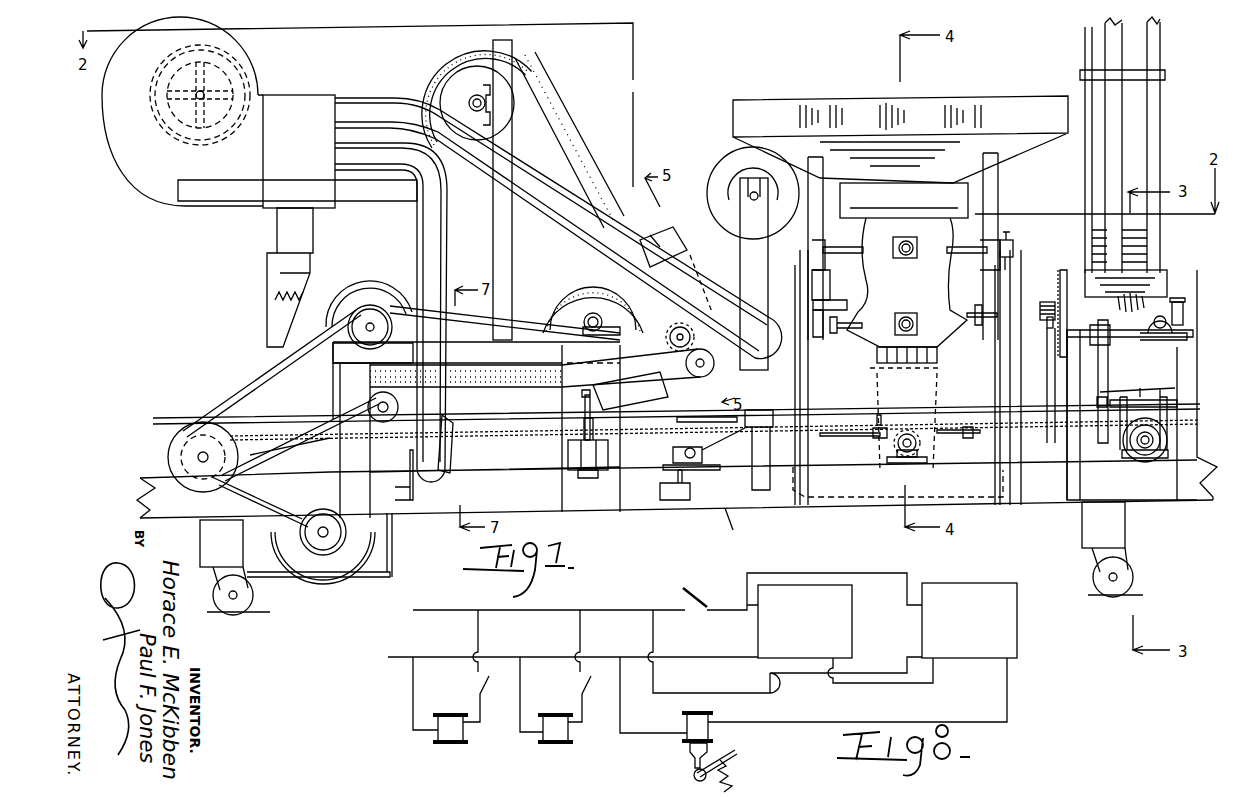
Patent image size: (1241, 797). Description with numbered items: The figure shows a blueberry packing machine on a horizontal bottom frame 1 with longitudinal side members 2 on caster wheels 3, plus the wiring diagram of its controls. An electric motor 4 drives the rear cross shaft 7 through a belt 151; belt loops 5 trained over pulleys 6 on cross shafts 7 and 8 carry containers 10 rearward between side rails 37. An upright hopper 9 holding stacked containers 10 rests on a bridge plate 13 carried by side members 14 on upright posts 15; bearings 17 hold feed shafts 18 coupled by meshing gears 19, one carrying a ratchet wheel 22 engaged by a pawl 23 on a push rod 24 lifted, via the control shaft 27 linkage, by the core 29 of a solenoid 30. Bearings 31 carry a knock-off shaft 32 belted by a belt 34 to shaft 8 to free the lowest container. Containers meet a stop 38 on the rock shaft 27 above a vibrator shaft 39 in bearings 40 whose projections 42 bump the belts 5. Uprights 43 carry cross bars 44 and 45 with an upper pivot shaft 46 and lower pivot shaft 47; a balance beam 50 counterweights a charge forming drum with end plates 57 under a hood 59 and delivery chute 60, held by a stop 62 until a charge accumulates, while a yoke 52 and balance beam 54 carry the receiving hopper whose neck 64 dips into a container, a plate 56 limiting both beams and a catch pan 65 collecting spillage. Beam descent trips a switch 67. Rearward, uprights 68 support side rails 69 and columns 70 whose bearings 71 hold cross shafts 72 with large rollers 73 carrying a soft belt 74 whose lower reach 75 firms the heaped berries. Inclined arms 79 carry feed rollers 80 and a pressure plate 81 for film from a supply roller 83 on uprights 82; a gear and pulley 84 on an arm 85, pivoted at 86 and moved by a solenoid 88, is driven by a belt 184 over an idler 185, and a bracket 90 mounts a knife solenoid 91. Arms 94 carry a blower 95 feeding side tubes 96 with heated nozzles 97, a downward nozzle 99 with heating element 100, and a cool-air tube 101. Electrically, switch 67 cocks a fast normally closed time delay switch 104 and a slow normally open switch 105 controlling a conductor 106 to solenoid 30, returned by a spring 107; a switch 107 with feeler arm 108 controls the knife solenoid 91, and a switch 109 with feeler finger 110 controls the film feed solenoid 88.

In FIG. 1, the bottom frame 1 is at (775, 505).
In FIG. 1, the longitudinal side members 2 is at (731, 530).
In FIG. 1, the caster wheels 3 is at (233, 607).
In FIG. 1, the electric motor 4 is at (335, 560).
In FIG. 1, the belt loops 5 is at (330, 440).
In FIG. 1, the pulleys 6 is at (185, 447).
In FIG. 1, the rear cross shaft 7 is at (198, 457).
In FIG. 1, the front cross shaft 8 is at (1160, 440).
In FIG. 1, the storage hopper 9 is at (1157, 132).
In FIG. 1, the containers 10 is at (940, 383).
In FIG. 1, the bridge plate 13 is at (1167, 280).
In FIG. 1, the side members 14 is at (1150, 350).
In FIG. 1, the upright posts 15 is at (1185, 377).
In FIG. 1, the bearings 17 is at (1183, 310).
In FIG. 1, the container feed shafts 18 is at (1172, 300).
In FIG. 1, the meshing gears 19 is at (1060, 270).
In FIG. 1, the ratchet wheel 22 is at (1045, 300).
In FIG. 1, the pawl 23 is at (1048, 325).
In FIG. 1, the push rod 24 is at (1050, 360).
In FIG. 1, the control shaft 27 is at (838, 437).
In FIG. 1, the reciprocable core 29 is at (1105, 380).
In FIG. 1, the solenoid 30 is at (1117, 368).
In FIG. 8, the solenoid 30 is at (685, 743).
In FIG. 1, the bearings 31 is at (1185, 340).
In FIG. 1, the knock-off shaft 32 is at (1175, 322).
In FIG. 1, the belt 34 is at (1145, 393).
In FIG. 1, the side rails 37 is at (170, 418).
In FIG. 1, the stop 38 is at (878, 420).
In FIG. 1, the transverse shaft 39 is at (905, 460).
In FIG. 1, the bearings 40 is at (912, 465).
In FIG. 1, the radial projections 42 is at (893, 445).
In FIG. 1, the uprights 43 is at (800, 473).
In FIG. 1, the upper cross bar 44 is at (810, 273).
In FIG. 1, the lower cross bar 45 is at (818, 338).
In FIG. 1, the upper pivot shaft 46 is at (860, 250).
In FIG. 1, the lower pivot shaft 47 is at (855, 325).
In FIG. 1, the balance beam 50 is at (905, 258).
In FIG. 1, the yoke 52 is at (943, 327).
In FIG. 1, the balance beam 54 is at (907, 317).
In FIG. 1, the plate 56 is at (950, 345).
In FIG. 1, the circular end plates 57 is at (823, 285).
In FIG. 1, the semi-cylindrical hood 59 is at (960, 197).
In FIG. 1, the delivery chute 60 is at (1018, 143).
In FIG. 1, the stop 62 is at (847, 300).
In FIG. 1, the neck 64 is at (877, 355).
In FIG. 1, the catch pan 65 is at (980, 500).
In FIG. 1, the electric switch 67 is at (1013, 245).
In FIG. 8, the electric switch 67 is at (700, 600).
In FIG. 1, the uprights 68 is at (390, 518).
In FIG. 1, the elevated side rails 69 is at (528, 350).
In FIG. 1, the columns 70 is at (512, 150).
In FIG. 1, the bearings 71 is at (472, 103).
In FIG. 1, the cross shafts 72 is at (480, 103).
In FIG. 1, the rollers 73 is at (467, 75).
In FIG. 1, the deformable belt 74 is at (563, 153).
In FIG. 1, the lower reach 75 is at (505, 380).
In FIG. 1, the inclined arms 79 is at (640, 395).
In FIG. 1, the feed rollers 80 is at (700, 262).
In FIG. 1, the pressure plate 81 is at (677, 323).
In FIG. 1, the uprights 82 is at (752, 235).
In FIG. 1, the supply roller 83 is at (735, 177).
In FIG. 1, the drive gear and pulley 84 is at (708, 370).
In FIG. 1, the arm 85 is at (585, 405).
In FIG. 1, the pivot 86 is at (725, 328).
In FIG. 1, the solenoid 88 is at (580, 462).
In FIG. 8, the solenoid 88 is at (452, 745).
In FIG. 1, the bracket 90 is at (675, 242).
In FIG. 1, the solenoid 91 is at (655, 238).
In FIG. 8, the solenoid 91 is at (548, 745).
In FIG. 1, the arms 94 is at (296, 185).
In FIG. 1, the blower 95 is at (252, 75).
In FIG. 1, the side tubes 96 is at (445, 257).
In FIG. 1, the nozzles 97 is at (452, 440).
In FIG. 1, the downwardly directed nozzle 99 is at (268, 290).
In FIG. 1, the heating element 100 is at (268, 316).
In FIG. 1, the forwardly inclined tube 101 is at (613, 243).
In FIG. 8, the time delay switch 104 is at (838, 583).
In FIG. 8, the time delay switch 105 is at (988, 583).
In FIG. 8, the conductor 106 is at (777, 686).
In FIG. 1, the switch 107 is at (763, 410).
In FIG. 8, the switch 107 is at (478, 683).
In FIG. 1, the feeler arm 108 is at (703, 420).
In FIG. 1, the switch 109 is at (678, 500).
In FIG. 8, the switch 109 is at (582, 683).
In FIG. 1, the feeler finger 110 is at (650, 460).
In FIG. 1, the belt 151 is at (240, 518).
In FIG. 1, the belt 184 is at (248, 362).
In FIG. 1, the idler 185 is at (353, 343).